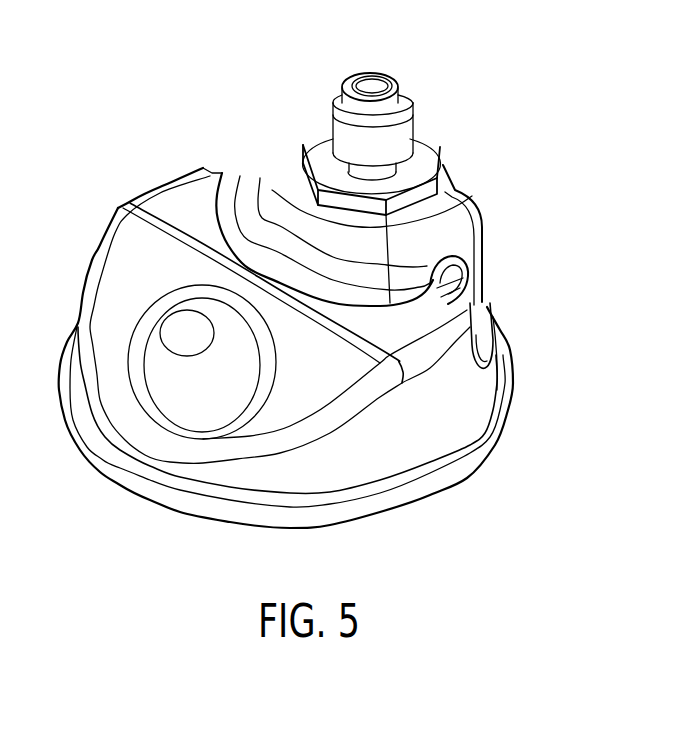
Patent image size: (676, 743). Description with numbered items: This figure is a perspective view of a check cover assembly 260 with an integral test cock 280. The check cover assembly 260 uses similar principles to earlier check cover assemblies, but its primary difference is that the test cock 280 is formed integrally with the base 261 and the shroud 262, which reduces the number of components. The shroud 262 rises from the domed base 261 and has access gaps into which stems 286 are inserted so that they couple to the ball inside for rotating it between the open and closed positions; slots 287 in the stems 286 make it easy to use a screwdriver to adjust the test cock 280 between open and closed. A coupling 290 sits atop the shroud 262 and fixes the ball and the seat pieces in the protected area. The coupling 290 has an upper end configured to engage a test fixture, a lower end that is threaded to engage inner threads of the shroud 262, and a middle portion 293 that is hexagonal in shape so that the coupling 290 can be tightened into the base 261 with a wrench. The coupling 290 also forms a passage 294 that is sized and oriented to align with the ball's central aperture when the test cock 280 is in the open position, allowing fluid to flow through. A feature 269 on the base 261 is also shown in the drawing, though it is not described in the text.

The check cover assembly 260 is at (115, 268).
The base 261 is at (437, 430).
The shroud 262 is at (268, 175).
The recess 269 is at (173, 373).
The test cock 280 is at (422, 175).
The stems 286 is at (463, 303).
The slots 287 is at (475, 283).
The coupling 290 is at (385, 117).
The middle portion 293 is at (427, 195).
The passage 294 is at (369, 90).